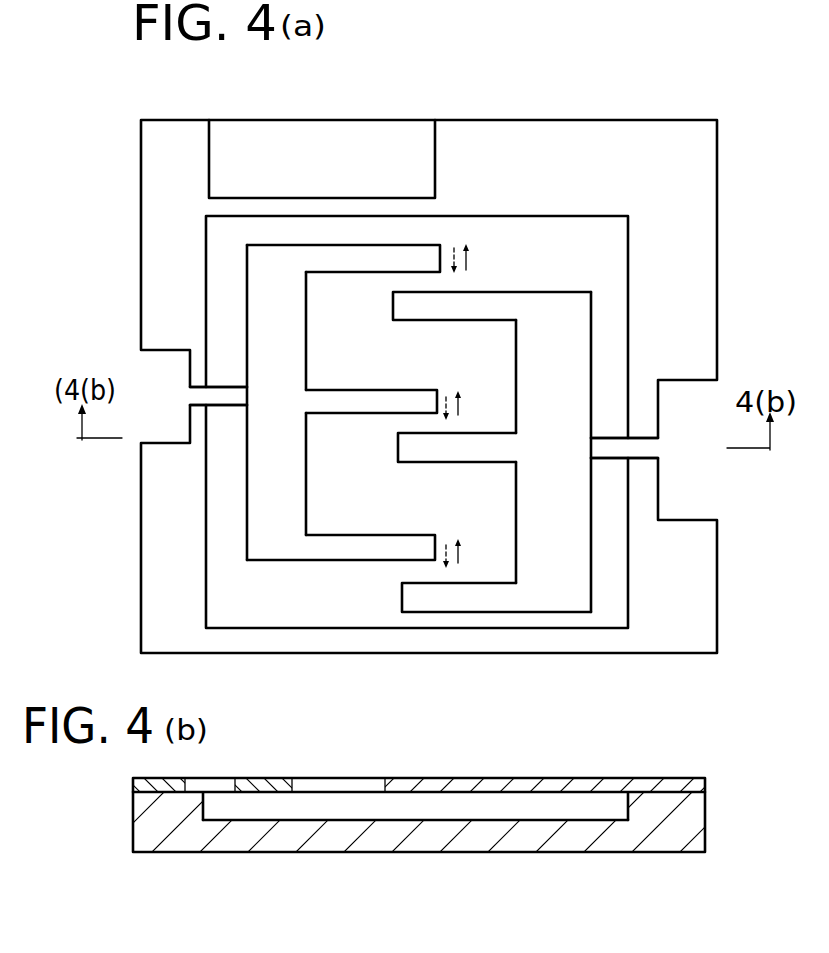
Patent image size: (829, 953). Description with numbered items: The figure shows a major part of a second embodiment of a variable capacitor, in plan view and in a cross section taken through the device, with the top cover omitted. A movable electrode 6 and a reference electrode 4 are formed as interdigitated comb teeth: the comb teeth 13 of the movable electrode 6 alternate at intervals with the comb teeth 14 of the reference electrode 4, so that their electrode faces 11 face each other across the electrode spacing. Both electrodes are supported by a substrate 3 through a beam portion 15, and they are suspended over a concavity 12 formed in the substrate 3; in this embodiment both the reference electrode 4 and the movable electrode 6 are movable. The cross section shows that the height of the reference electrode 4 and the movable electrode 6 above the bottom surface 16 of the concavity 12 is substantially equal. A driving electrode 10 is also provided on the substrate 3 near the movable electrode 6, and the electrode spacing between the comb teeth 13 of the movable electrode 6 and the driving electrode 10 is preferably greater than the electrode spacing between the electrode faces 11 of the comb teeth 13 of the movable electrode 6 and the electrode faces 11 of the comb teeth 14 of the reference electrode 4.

In FIG. 4A, the substrate 3 is at (605, 145).
In FIG. 4B, the substrate 3 is at (702, 821).
In FIG. 4A, the reference electrode 4 is at (578, 317).
In FIG. 4A, the movable electrode 6 is at (247, 307).
In FIG. 4A, the driving electrode 10 is at (415, 150).
In FIG. 4A, the electrode faces 11 is at (398, 280).
In FIG. 4A, the concavity 12 is at (289, 605).
In FIG. 4B, the concavity 12 is at (308, 803).
In FIG. 4A, the comb teeth of the movable electrode 13 is at (440, 245).
In FIG. 4B, the comb teeth of the movable electrode 13 is at (366, 760).
In FIG. 4A, the comb teeth of the reference electrode 14 is at (492, 306).
In FIG. 4B, the comb teeth of the reference electrode 14 is at (545, 778).
In FIG. 4A, the beam portion 15 is at (212, 410).
In FIG. 4B, the bottom surface of the concavity 16 is at (437, 814).